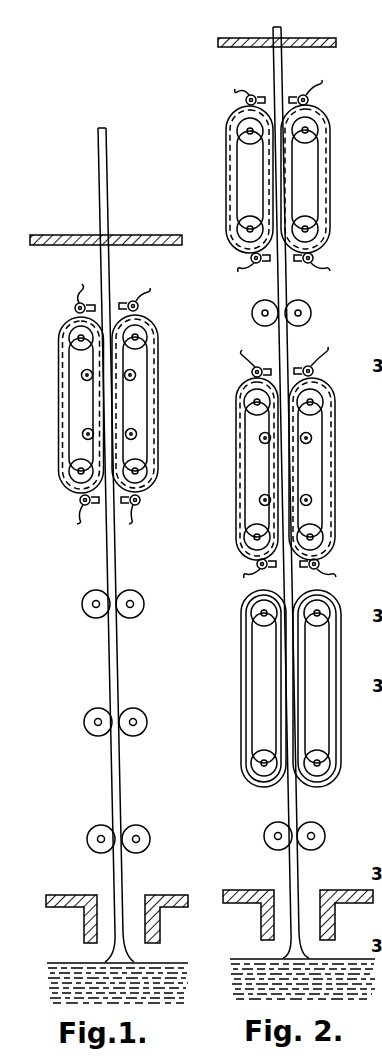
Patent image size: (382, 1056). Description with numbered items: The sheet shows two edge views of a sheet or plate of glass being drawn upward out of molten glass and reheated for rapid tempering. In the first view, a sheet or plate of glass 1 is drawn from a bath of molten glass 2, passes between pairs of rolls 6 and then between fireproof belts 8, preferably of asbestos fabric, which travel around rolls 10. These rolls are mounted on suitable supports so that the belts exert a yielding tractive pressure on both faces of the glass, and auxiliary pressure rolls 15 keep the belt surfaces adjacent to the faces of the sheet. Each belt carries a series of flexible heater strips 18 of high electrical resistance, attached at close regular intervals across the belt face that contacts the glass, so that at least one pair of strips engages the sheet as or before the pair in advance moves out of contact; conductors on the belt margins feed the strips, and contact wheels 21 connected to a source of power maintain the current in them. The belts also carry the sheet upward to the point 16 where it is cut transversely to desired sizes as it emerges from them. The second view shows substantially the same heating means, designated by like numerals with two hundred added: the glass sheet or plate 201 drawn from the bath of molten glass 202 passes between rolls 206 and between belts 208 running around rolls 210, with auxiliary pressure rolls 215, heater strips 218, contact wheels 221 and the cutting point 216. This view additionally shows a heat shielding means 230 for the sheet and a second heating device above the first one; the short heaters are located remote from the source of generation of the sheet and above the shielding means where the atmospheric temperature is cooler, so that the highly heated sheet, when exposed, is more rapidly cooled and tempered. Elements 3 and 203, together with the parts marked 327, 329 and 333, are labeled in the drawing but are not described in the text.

In FIG. 1, the sheet or plate of glass 1 is at (103, 150).
In FIG. 1, the bath of molten glass 2 is at (52, 966).
In FIG. 1, the cover plate 3 is at (52, 895).
In FIG. 1, the rolls 6 is at (136, 831).
In FIG. 1, the fireproof belts 8 is at (158, 432).
In FIG. 1, the rolls 10 is at (140, 471).
In FIG. 1, the auxiliary pressure rolls 15 is at (134, 394).
In FIG. 1, the cutting point 16 is at (66, 236).
In FIG. 1, the heater strips 18 is at (156, 395).
In FIG. 1, the contact wheels 21 is at (130, 502).
In FIG. 2, the sheet or plate of glass 201 is at (279, 36).
In FIG. 2, the bath of molten glass 202 is at (245, 962).
In FIG. 2, the cover plate 203 is at (240, 890).
In FIG. 2, the rolls 206 is at (311, 850).
In FIG. 2, the fireproof belts 208 is at (334, 515).
In FIG. 2, the rolls 210 is at (318, 766).
In FIG. 2, the auxiliary pressure rolls 215 is at (306, 494).
In FIG. 2, the cutting point 216 is at (238, 46).
In FIG. 2, the heater strips 218 is at (334, 545).
In FIG. 2, the contact wheels 221 is at (310, 568).
In FIG. 2, the heat shielding means 230 is at (245, 676).
In FIG. 2, the lever 327 is at (381, 415).
In FIG. 2, the spring 329 is at (368, 472).
In FIG. 2, the support 333 is at (368, 450).